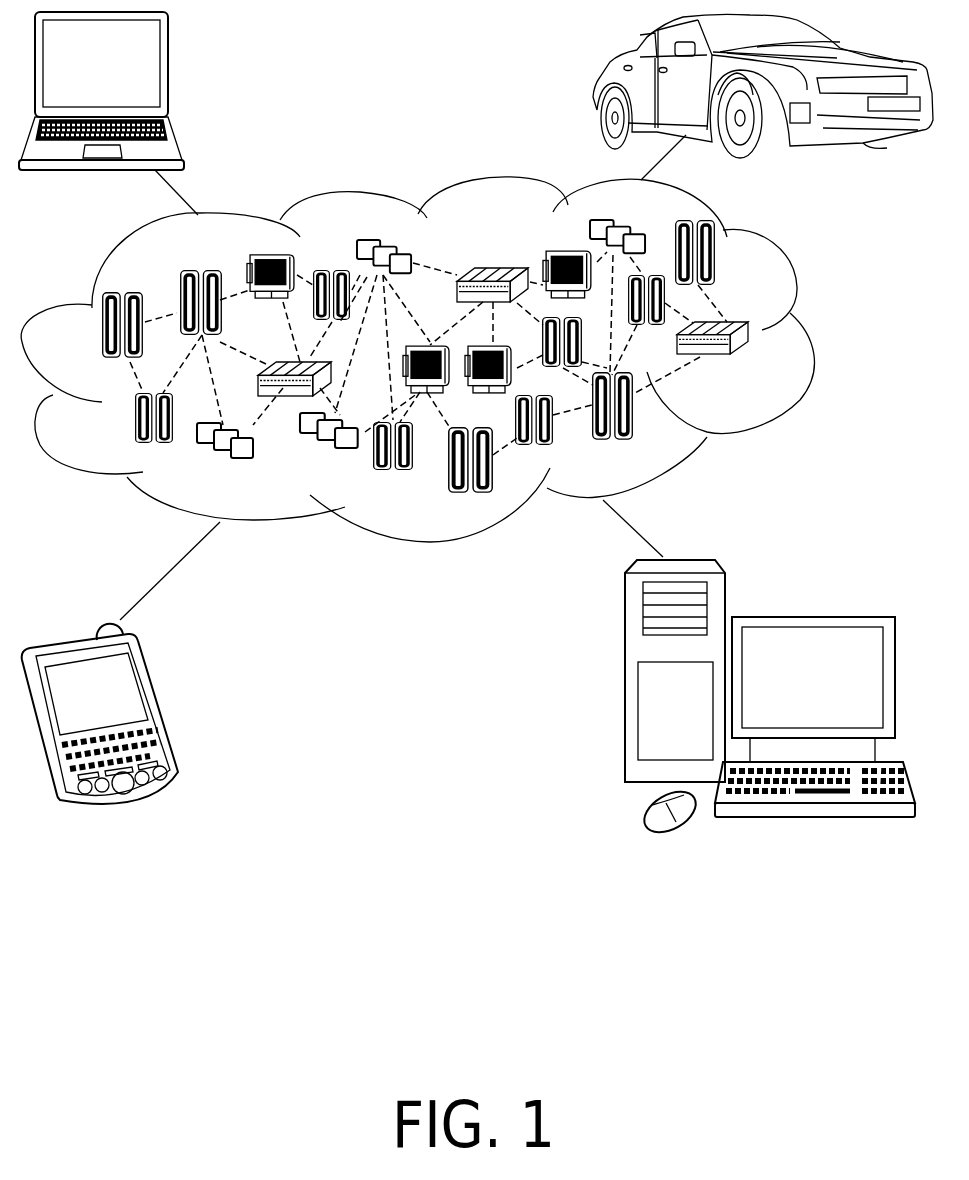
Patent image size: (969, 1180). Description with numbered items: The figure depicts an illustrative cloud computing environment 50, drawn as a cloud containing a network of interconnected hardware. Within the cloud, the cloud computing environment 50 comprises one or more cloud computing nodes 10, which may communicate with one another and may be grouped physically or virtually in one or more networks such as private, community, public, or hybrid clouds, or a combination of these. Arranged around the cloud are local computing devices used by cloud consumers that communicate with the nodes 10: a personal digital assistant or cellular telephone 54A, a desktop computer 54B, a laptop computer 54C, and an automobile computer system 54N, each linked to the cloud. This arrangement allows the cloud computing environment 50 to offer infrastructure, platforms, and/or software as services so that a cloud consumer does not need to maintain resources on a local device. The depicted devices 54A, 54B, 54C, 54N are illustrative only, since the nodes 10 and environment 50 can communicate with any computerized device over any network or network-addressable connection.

The cloud computing nodes 10 is at (768, 367).
The cloud computing environment 50 is at (810, 335).
The personal digital assistant or cellular telephone 54A is at (155, 708).
The desktop computer 54B is at (810, 615).
The laptop computer 54C is at (172, 70).
The automobile computer system 54N is at (597, 85).